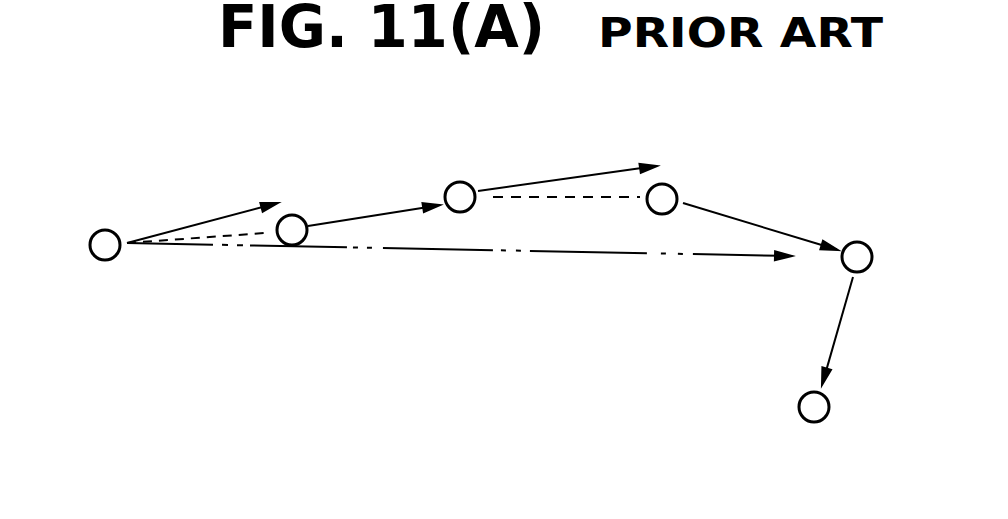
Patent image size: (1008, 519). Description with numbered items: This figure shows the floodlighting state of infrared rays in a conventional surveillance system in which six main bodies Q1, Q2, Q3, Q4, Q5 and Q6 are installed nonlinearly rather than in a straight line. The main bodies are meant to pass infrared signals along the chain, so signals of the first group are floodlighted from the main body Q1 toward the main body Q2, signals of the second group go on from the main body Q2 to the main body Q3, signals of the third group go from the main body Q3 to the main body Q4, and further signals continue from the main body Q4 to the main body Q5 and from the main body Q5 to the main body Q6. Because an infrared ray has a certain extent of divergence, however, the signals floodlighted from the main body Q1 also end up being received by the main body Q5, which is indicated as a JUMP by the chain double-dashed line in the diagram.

The main body Q1 is at (112, 224).
The main body Q2 is at (303, 211).
The main body Q3 is at (467, 177).
The main body Q4 is at (678, 183).
The main body Q5 is at (863, 235).
The main body Q6 is at (819, 429).
The jump JUMP is at (459, 274).